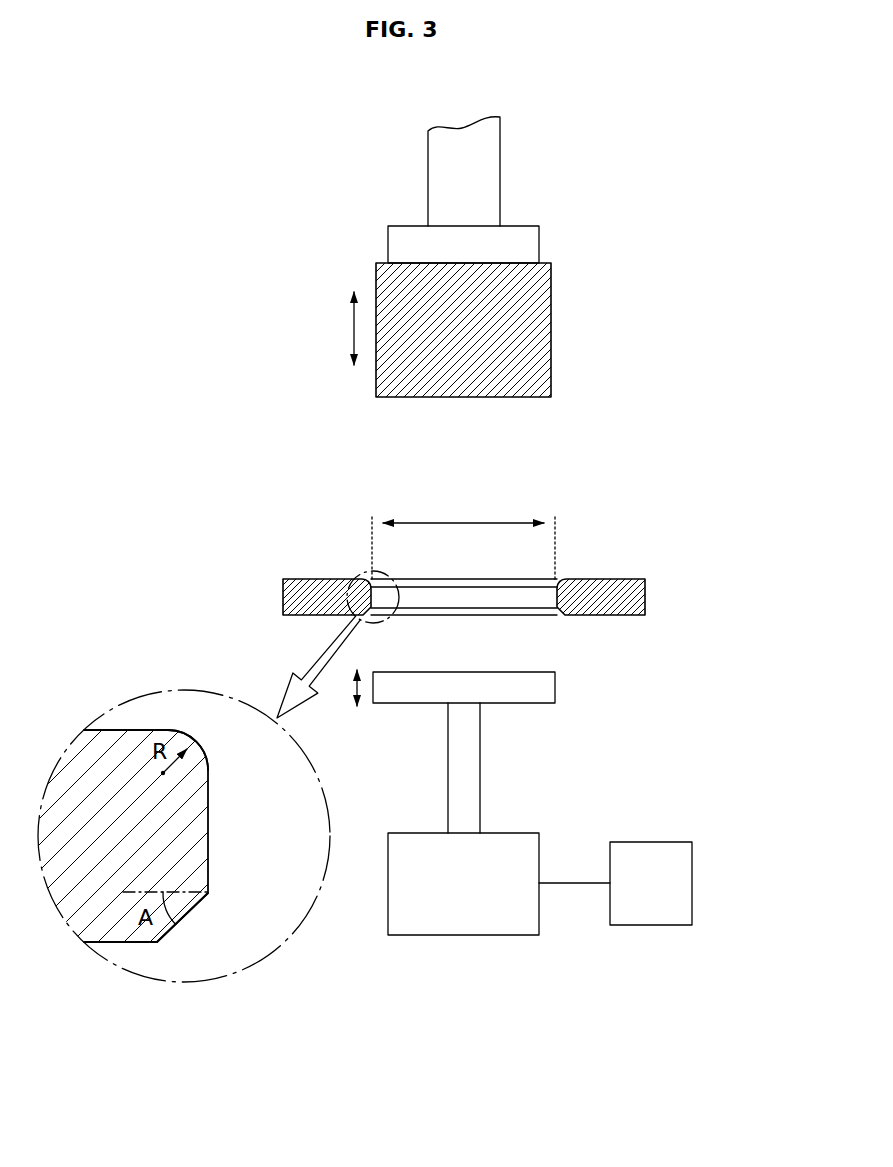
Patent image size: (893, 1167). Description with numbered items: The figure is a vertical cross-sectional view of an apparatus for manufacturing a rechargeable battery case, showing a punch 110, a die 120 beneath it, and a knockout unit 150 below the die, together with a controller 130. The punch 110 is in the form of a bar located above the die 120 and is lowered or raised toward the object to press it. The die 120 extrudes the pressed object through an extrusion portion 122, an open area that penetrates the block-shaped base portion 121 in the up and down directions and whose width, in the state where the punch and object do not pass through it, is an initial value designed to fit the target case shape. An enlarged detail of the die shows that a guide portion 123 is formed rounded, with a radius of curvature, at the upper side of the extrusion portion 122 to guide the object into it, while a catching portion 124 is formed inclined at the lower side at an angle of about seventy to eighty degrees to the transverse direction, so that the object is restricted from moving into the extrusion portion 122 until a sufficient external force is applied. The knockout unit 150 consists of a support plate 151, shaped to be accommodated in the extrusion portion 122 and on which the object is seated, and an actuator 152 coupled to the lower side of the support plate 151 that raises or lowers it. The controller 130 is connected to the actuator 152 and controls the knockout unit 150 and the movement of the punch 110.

The punch 110 is at (535, 330).
The die 120 is at (446, 584).
The base portion 121 is at (188, 828).
The extrusion portion 122 is at (507, 592).
The guide portion 123 is at (172, 715).
The catching portion 124 is at (203, 900).
The controller 130 is at (692, 883).
The knockout unit 150 is at (544, 802).
The support plate 151 is at (522, 695).
The actuator 152 is at (520, 843).